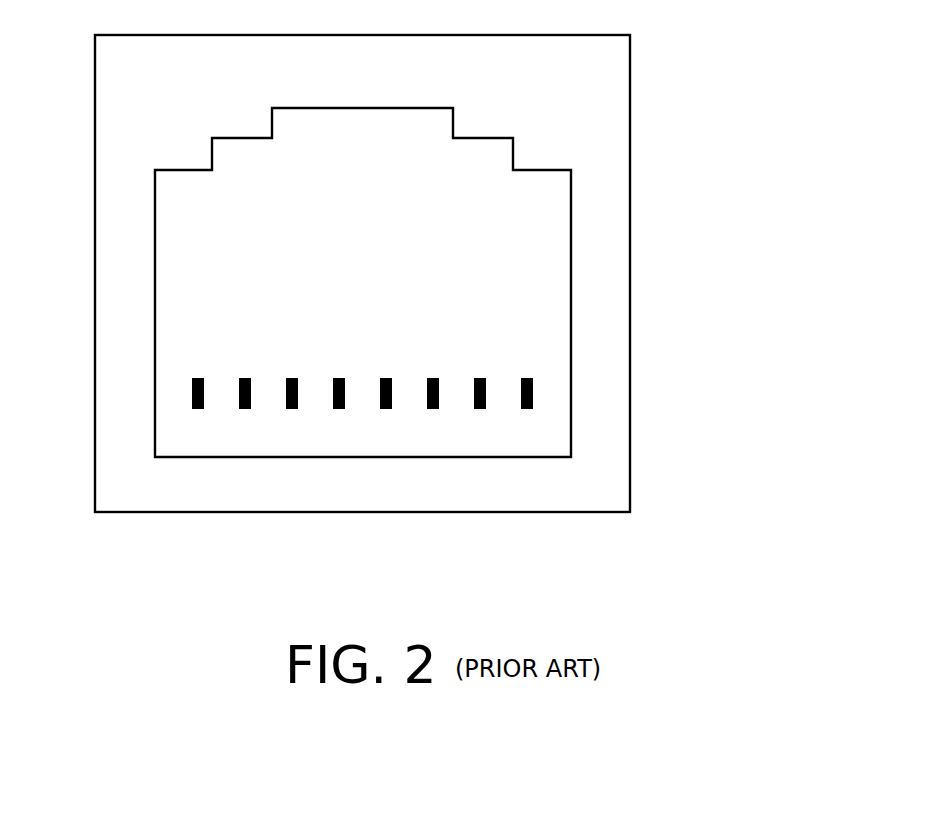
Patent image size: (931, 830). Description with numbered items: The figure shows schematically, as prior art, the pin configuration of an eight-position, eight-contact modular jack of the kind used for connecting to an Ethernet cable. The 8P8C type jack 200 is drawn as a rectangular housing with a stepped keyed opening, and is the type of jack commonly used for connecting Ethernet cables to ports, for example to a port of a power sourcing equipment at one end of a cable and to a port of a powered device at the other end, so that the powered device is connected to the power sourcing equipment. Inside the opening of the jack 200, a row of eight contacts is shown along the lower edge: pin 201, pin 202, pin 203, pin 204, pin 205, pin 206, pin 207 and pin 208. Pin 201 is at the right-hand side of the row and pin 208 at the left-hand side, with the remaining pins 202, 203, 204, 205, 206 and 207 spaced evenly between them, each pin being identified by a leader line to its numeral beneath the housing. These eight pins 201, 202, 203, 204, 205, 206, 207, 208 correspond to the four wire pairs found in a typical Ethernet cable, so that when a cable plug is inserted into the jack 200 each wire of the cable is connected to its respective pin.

The 8P8C type jack 200 is at (680, 87).
The pin 201 is at (527, 409).
The pin 202 is at (480, 409).
The pin 203 is at (433, 409).
The pin 204 is at (386, 409).
The pin 205 is at (339, 409).
The pin 206 is at (292, 409).
The pin 207 is at (245, 409).
The pin 208 is at (198, 409).